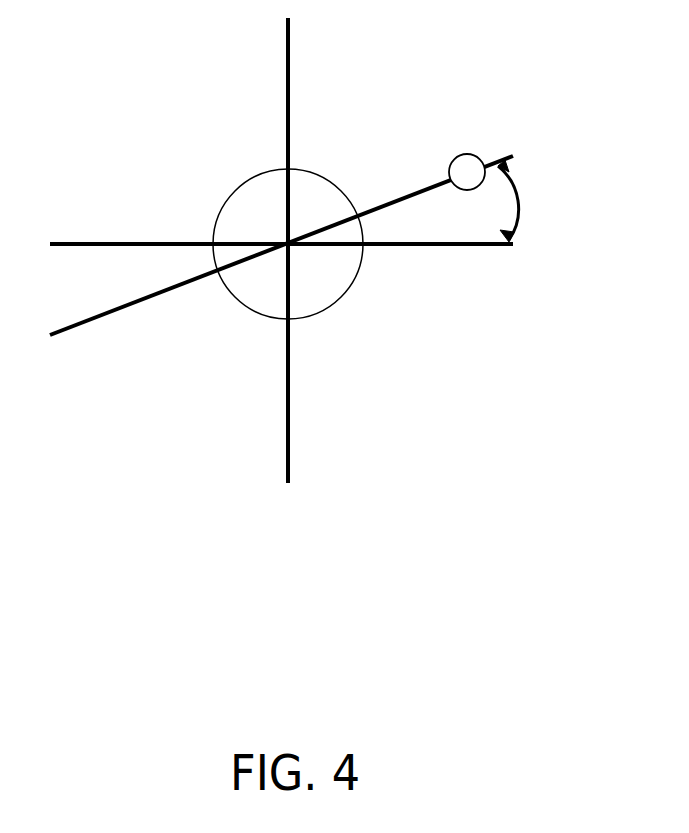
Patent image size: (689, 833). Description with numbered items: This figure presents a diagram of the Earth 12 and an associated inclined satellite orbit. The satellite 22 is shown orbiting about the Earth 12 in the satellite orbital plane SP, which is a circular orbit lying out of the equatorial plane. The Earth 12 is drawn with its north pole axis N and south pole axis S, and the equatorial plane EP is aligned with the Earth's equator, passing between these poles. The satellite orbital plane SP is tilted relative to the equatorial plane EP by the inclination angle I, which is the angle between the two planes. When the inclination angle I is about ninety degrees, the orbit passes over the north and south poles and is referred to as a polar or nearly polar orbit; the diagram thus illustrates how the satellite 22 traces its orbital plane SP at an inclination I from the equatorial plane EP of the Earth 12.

The Earth 12 is at (345, 292).
The satellite 22 is at (472, 153).
The north pole axis N is at (302, 130).
The south pole axis S is at (300, 363).
The equatorial plane EP is at (281, 226).
The satellite orbital plane SP is at (281, 261).
The inclination angle I is at (519, 201).